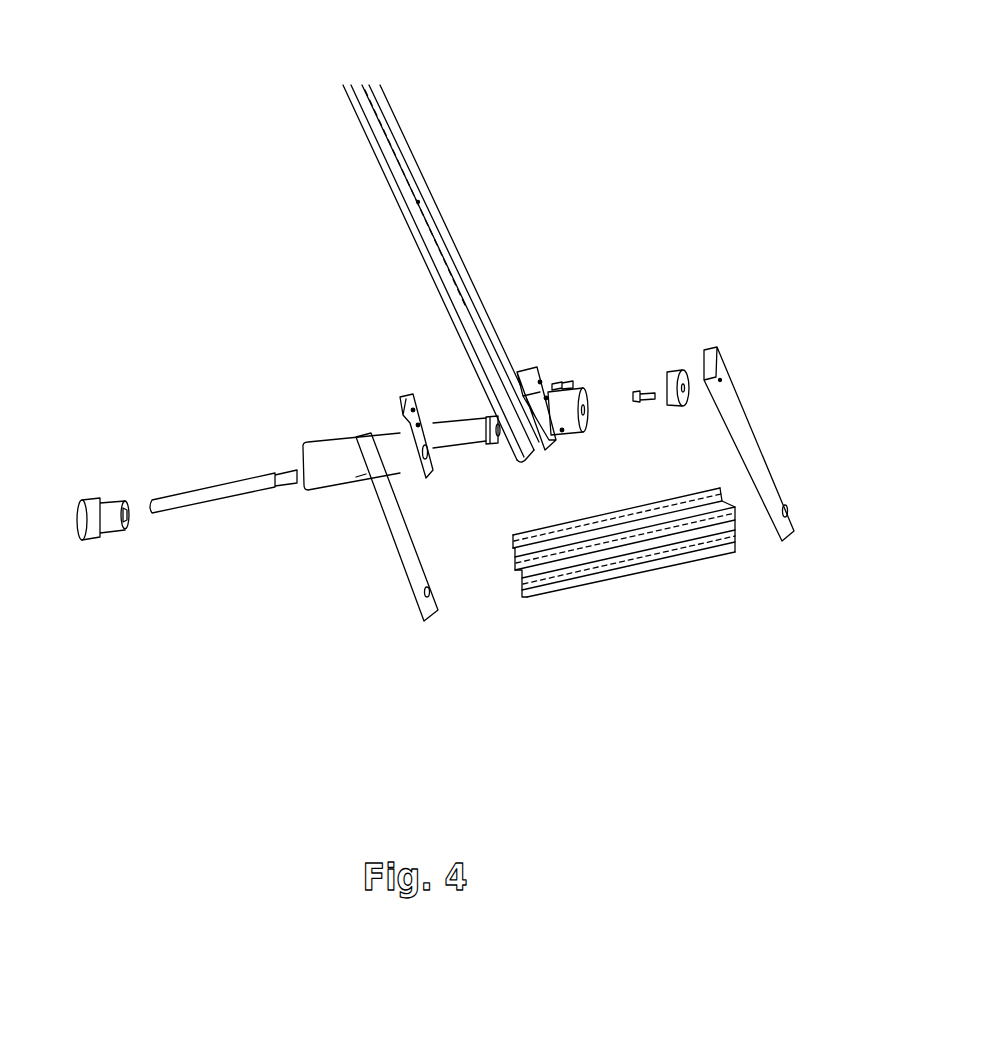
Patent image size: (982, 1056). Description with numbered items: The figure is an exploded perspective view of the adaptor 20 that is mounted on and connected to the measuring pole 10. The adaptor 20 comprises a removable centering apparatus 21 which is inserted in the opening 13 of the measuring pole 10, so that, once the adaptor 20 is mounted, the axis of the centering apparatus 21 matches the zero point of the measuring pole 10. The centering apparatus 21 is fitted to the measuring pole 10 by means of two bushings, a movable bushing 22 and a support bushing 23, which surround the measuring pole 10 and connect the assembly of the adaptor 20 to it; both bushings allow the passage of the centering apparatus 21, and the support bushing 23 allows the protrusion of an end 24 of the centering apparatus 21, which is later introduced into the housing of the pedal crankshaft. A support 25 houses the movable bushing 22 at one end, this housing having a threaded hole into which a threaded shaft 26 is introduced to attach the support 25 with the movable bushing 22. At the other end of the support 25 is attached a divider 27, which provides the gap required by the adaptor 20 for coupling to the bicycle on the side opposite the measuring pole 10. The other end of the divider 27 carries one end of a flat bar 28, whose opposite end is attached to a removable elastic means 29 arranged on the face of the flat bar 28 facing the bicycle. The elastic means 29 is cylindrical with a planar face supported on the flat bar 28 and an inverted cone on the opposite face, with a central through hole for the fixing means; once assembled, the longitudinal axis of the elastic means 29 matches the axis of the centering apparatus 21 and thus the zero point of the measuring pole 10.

The measuring pole 10 is at (371, 214).
The opening 13 is at (518, 372).
The adaptor 20 is at (623, 160).
The centering apparatus 21 is at (463, 402).
The movable bushing 22 is at (565, 408).
The support bushing 23 is at (383, 457).
The end 24 is at (483, 450).
The support 25 is at (390, 507).
The threaded shaft 26 is at (185, 500).
The divider 27 is at (600, 542).
The flat bar 28 is at (748, 410).
The elastic means 29 is at (673, 378).